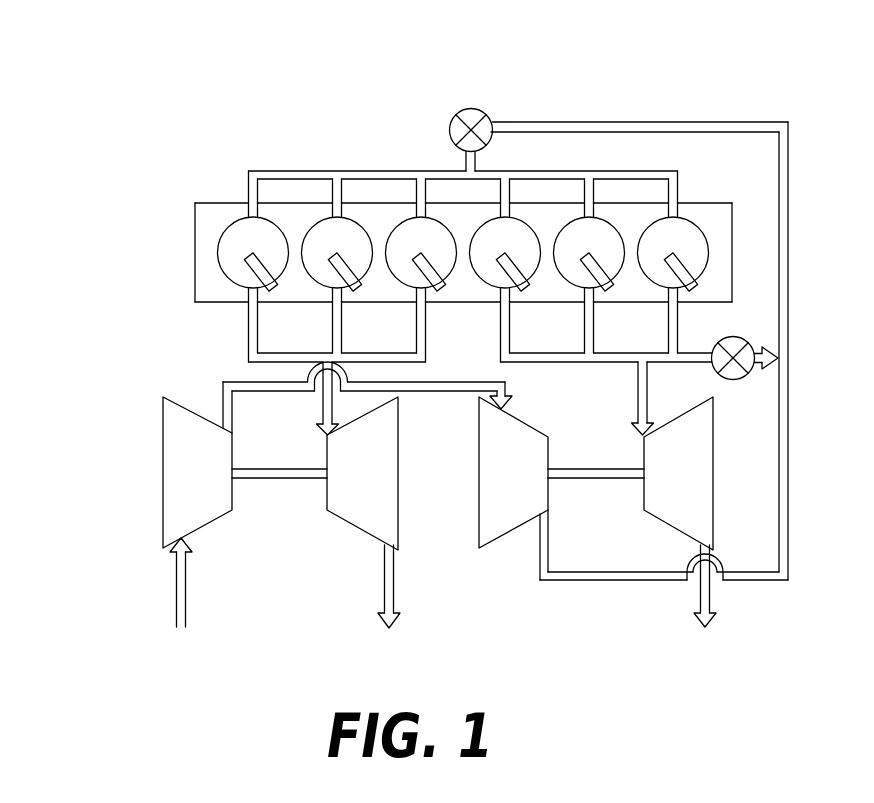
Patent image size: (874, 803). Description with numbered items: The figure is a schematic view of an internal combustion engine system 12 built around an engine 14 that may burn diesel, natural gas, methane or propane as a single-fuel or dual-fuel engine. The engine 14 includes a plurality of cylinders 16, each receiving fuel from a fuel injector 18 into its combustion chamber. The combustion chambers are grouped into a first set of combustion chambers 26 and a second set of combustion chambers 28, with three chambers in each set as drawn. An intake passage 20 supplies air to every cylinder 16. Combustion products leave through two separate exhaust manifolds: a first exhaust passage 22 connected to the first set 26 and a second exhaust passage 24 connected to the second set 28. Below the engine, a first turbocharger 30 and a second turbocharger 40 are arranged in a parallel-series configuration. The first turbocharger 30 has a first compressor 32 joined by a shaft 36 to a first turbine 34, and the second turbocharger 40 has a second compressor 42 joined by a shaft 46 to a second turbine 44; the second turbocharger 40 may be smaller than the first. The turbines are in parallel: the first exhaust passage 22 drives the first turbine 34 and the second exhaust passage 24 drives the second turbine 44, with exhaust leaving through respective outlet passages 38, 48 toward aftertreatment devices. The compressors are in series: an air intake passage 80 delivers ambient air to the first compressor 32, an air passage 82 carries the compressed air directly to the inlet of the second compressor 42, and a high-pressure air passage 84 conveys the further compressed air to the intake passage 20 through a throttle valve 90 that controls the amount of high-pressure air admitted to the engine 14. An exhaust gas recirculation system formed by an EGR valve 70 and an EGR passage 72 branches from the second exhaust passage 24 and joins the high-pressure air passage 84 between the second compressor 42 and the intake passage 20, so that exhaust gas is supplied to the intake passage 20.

The engine system 12 is at (147, 95).
The engine 14 is at (207, 292).
The cylinders 16 is at (217, 243).
The fuel injectors 18 is at (270, 290).
The intake passage 20 is at (322, 171).
The first exhaust passage 22 is at (253, 355).
The second exhaust passage 24 is at (545, 362).
The first set of combustion chambers 26 is at (233, 227).
The second set of combustion chambers 28 is at (487, 225).
The first turbocharger 30 is at (409, 466).
The first compressor 32 is at (163, 494).
The first turbine 34 is at (386, 512).
The shaft 36 is at (275, 478).
The outlet passage 38 is at (385, 590).
The second turbocharger 40 is at (732, 451).
The second compressor 42 is at (493, 540).
The second turbine 44 is at (700, 508).
The shaft 46 is at (592, 478).
The outlet passage 48 is at (699, 607).
The EGR valve 70 is at (735, 340).
The EGR passage 72 is at (695, 362).
The air intake passage 80 is at (177, 597).
The air passage 82 is at (223, 397).
The high-pressure air passage 84 is at (555, 580).
The throttle valve 90 is at (479, 108).